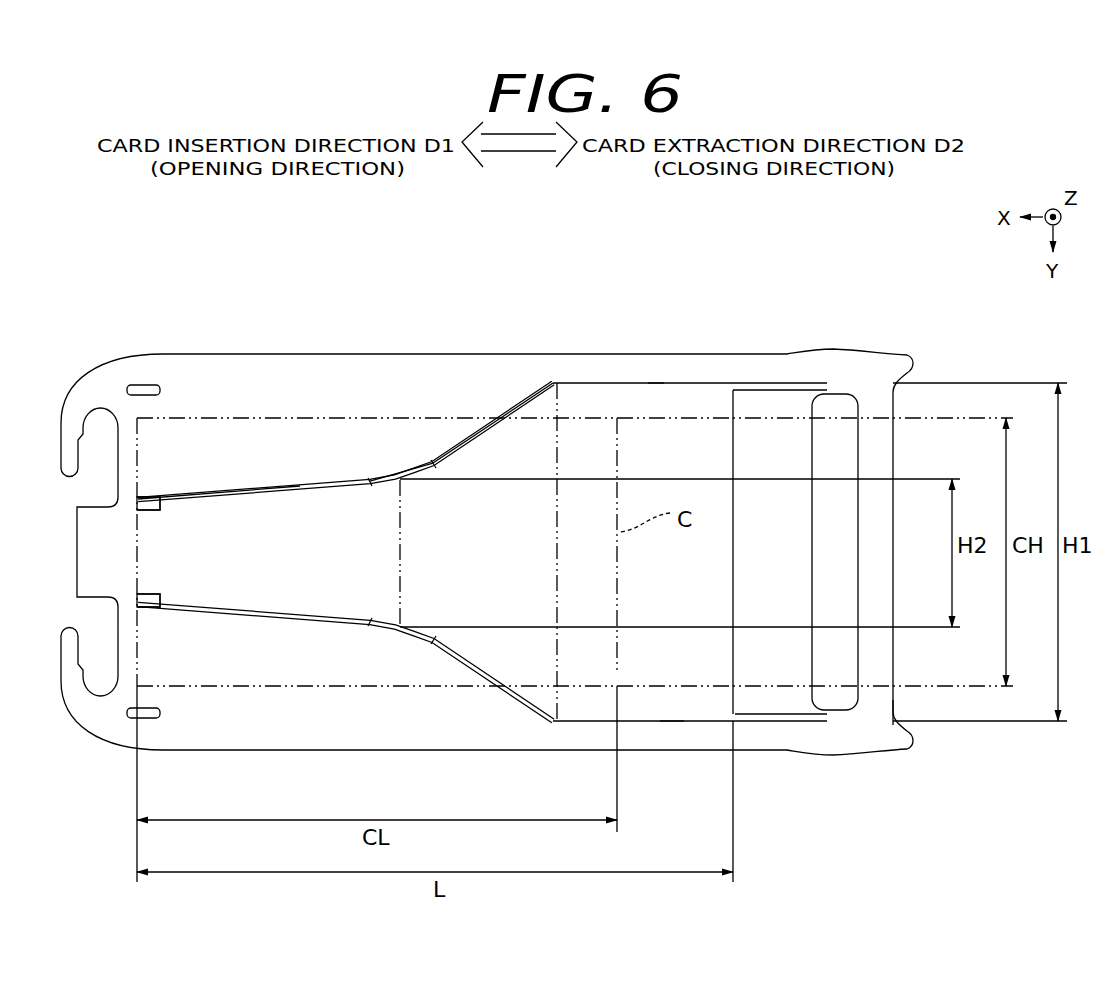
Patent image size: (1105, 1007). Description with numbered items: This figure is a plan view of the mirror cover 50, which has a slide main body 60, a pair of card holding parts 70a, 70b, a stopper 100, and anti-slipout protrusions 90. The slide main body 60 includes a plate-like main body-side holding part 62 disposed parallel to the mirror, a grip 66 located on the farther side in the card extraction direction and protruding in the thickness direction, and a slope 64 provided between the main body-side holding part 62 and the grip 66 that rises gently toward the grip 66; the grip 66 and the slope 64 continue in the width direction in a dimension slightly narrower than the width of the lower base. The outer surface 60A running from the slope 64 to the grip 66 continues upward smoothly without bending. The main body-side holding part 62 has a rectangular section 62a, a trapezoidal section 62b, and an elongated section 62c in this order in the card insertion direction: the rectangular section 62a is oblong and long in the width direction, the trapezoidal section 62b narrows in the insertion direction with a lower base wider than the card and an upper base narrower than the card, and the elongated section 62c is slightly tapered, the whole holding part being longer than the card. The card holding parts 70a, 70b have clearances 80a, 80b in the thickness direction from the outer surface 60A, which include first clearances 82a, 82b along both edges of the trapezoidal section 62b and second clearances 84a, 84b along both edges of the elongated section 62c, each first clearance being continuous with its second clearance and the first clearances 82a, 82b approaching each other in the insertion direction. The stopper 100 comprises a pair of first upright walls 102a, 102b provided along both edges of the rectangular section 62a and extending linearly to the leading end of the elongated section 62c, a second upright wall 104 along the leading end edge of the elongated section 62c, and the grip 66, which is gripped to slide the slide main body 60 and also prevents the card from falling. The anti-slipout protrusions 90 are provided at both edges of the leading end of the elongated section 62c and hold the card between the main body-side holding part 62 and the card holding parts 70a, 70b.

The mirror cover 50 is at (523, 523).
The slide main body 60 is at (515, 523).
The outer surface 60A is at (705, 702).
The main body-side holding part 62 is at (588, 296).
The rectangular section 62a is at (645, 443).
The trapezoidal section 62b is at (517, 487).
The elongated section 62c is at (320, 515).
The slope 64 is at (772, 408).
The grip 66 is at (823, 407).
The card holding part 70a is at (288, 385).
The card holding part 70b is at (328, 723).
The clearance 80a is at (391, 398).
The clearance 80b is at (346, 640).
The first clearance 82a is at (434, 466).
The first clearance 82b is at (434, 638).
The second clearance 84a is at (371, 482).
The second clearance 84b is at (371, 622).
The anti-slipout protrusion 90 is at (148, 500).
The stopper 100 is at (501, 545).
The first upright wall 102a is at (659, 382).
The first upright wall 102b is at (678, 723).
The second upright wall 104 is at (140, 543).